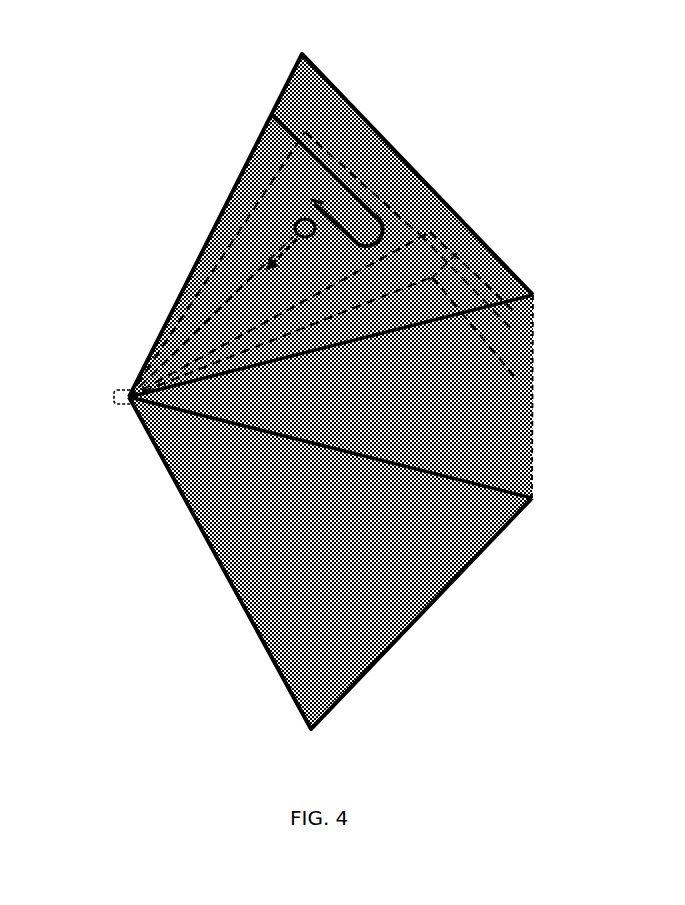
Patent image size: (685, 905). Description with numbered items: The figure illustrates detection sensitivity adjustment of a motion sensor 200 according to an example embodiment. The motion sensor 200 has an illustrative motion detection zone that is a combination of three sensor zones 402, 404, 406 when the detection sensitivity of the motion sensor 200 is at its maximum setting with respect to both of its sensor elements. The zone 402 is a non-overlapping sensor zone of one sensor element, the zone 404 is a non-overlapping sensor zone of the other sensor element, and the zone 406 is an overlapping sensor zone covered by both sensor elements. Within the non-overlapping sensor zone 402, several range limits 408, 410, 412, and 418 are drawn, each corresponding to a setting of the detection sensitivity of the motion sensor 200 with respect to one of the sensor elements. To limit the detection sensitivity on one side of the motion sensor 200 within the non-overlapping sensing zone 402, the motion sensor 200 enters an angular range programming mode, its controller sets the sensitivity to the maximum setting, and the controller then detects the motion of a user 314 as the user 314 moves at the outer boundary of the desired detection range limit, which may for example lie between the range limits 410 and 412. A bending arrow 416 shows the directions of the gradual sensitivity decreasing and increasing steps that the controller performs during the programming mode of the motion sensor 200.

The motion sensor 200 is at (114, 390).
The user 314 is at (295, 222).
The sensor zone 402 is at (358, 130).
The sensor zone 404 is at (432, 565).
The sensor zone 406 is at (497, 439).
The range limit 408 is at (430, 232).
The range limit 410 is at (432, 277).
The range limit 412 is at (505, 290).
The bending arrow 416 is at (273, 131).
The range limit 418 is at (395, 150).